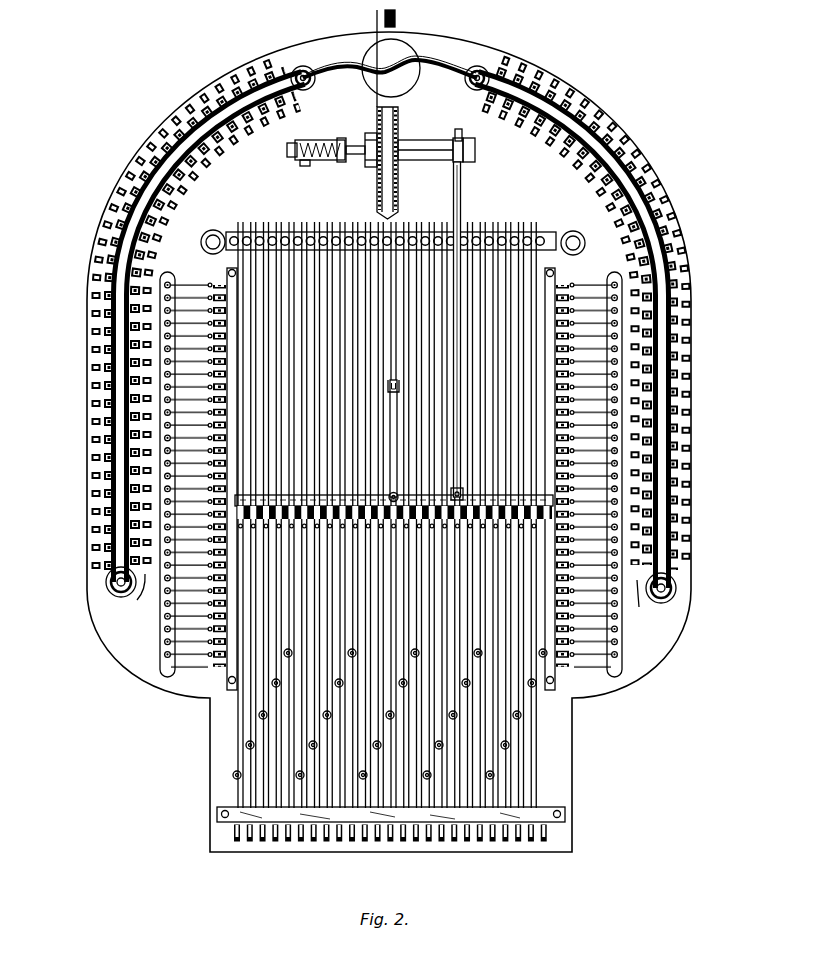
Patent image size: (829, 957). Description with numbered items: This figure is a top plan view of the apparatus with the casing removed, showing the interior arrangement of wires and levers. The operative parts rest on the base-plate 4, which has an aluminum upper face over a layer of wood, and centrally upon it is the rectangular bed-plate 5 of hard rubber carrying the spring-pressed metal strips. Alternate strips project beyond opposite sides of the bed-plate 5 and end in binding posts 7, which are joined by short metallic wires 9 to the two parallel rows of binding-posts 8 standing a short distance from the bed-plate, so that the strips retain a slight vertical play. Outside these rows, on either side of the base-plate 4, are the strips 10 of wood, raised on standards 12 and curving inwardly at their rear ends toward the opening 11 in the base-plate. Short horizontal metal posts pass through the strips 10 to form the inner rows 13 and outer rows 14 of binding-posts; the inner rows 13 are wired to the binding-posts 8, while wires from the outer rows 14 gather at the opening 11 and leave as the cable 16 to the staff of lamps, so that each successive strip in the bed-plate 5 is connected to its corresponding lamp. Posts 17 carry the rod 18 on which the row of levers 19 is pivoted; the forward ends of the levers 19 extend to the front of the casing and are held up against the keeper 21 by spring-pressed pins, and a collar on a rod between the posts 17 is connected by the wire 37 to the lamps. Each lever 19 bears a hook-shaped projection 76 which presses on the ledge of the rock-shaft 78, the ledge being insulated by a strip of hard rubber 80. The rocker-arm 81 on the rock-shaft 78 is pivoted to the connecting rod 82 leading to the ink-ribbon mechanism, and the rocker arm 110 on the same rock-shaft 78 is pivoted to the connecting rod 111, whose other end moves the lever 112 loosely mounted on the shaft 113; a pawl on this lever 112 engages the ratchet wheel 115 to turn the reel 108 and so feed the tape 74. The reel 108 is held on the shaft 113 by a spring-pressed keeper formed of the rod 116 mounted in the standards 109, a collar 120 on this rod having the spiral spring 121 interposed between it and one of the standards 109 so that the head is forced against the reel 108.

The base-plate 4 is at (389, 442).
The bed-plate 5 is at (229, 274).
The binding post 7 is at (214, 284).
The binding-posts 8 is at (163, 655).
The short metallic wires 9 is at (190, 655).
The strips 10 is at (112, 558).
The opening 11 is at (390, 68).
The standards 12 is at (107, 585).
The inner rows of binding-posts 13 is at (396, 600).
The outer rows of binding-posts 14 is at (94, 405).
The cable 16 is at (396, 21).
The posts 17 is at (213, 230).
The rod 18 is at (229, 232).
The levers 19 is at (304, 222).
The keeper 21 is at (226, 818).
The wire 37 is at (377, 105).
The tape 74 is at (390, 200).
The hook-shaped projection 76 is at (237, 505).
The rock-shaft 78 is at (244, 496).
The strip of hard rubber 80 is at (250, 522).
The rocker-arm 81 is at (388, 494).
The connecting rod 82 is at (398, 432).
The reel 108 is at (378, 118).
The standards 109 is at (290, 158).
The rocker arm 110 is at (464, 493).
The connecting rod 111 is at (461, 191).
The lever 112 is at (455, 160).
The shaft 113 is at (416, 143).
The ratchet wheel 115 is at (459, 131).
The rod 116 is at (341, 138).
The collar 120 is at (320, 145).
The spiral spring 121 is at (304, 165).